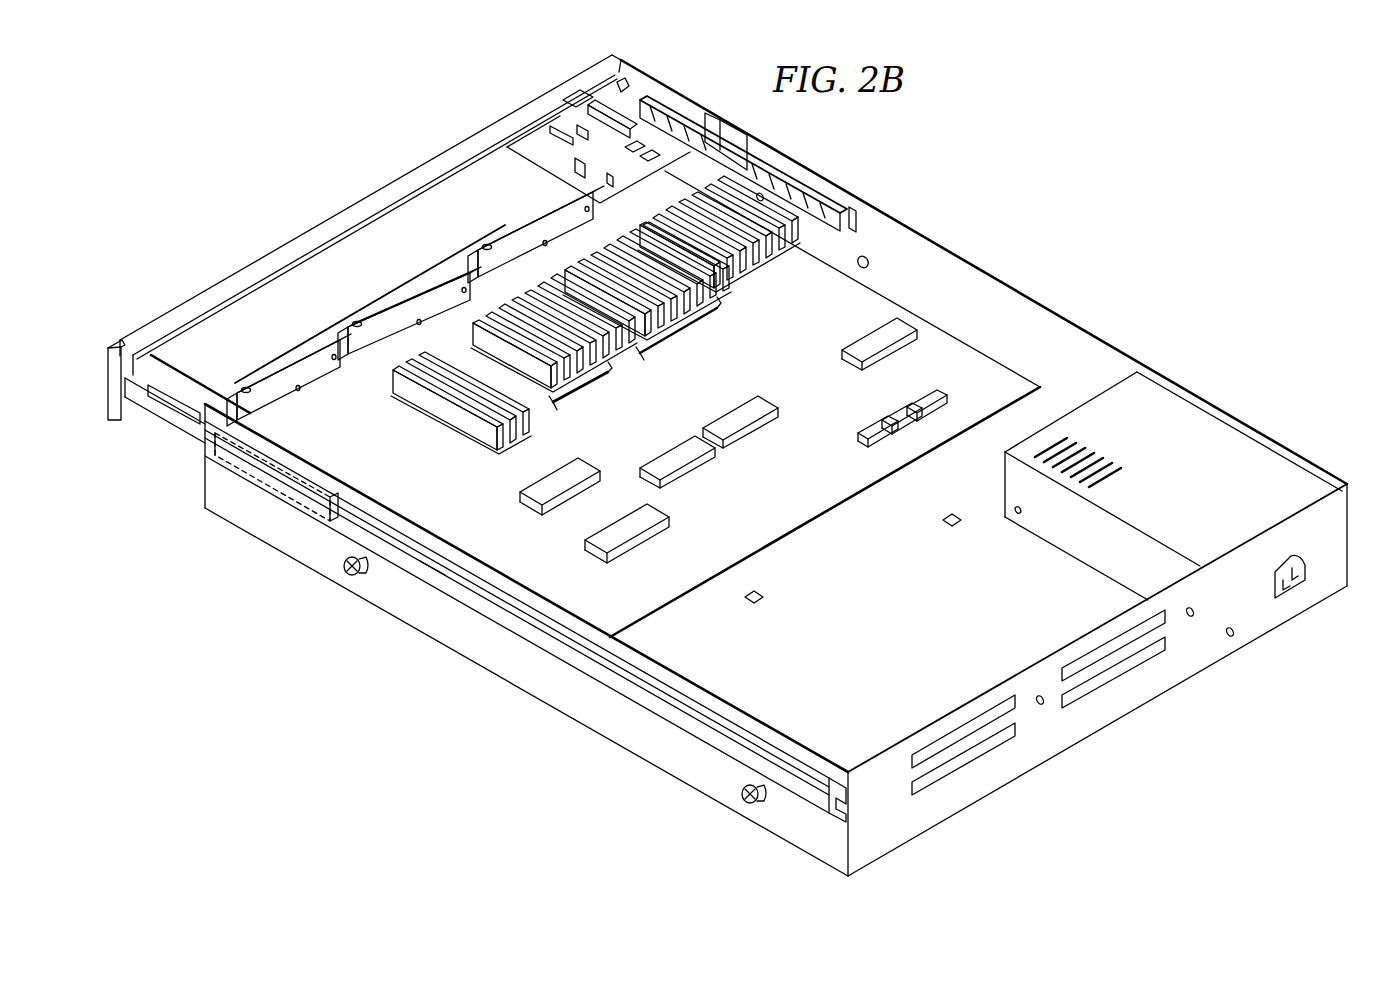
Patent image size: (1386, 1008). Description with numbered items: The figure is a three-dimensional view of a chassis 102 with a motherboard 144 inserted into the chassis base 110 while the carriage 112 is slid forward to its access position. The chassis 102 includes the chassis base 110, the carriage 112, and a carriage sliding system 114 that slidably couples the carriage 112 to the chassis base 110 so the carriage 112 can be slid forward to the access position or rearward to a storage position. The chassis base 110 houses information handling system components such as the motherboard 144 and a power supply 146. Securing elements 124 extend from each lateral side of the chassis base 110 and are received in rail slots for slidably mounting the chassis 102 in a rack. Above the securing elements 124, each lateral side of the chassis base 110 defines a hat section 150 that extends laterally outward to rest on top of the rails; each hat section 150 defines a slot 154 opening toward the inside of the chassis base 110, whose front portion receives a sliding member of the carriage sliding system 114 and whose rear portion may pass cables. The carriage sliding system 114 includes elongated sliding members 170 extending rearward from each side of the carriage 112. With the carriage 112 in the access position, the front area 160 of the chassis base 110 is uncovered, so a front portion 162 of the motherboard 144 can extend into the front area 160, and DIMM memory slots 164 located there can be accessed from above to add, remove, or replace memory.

The chassis 102 is at (982, 178).
The chassis base 110 is at (393, 602).
The carriage 112 is at (361, 396).
The carriage sliding system 114 is at (684, 104).
The securing elements 124 is at (344, 570).
The motherboard 144 is at (950, 352).
The power supply 146 is at (1068, 537).
The hat section 150 is at (500, 610).
The slot 154 is at (432, 573).
The front area 160 is at (821, 555).
The front portion 162 is at (452, 358).
The DIMM memory slots 164 is at (640, 357).
The sliding members 170 is at (820, 212).